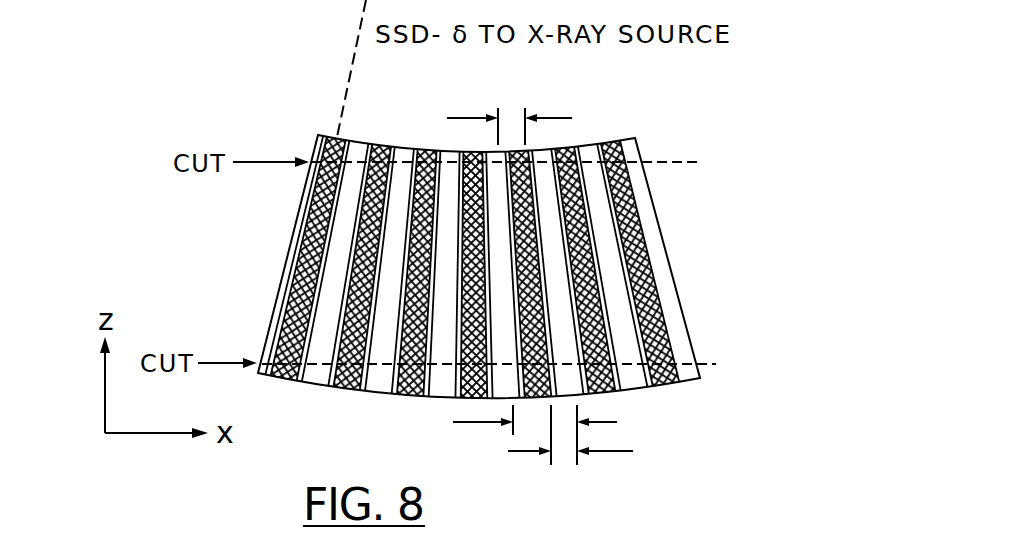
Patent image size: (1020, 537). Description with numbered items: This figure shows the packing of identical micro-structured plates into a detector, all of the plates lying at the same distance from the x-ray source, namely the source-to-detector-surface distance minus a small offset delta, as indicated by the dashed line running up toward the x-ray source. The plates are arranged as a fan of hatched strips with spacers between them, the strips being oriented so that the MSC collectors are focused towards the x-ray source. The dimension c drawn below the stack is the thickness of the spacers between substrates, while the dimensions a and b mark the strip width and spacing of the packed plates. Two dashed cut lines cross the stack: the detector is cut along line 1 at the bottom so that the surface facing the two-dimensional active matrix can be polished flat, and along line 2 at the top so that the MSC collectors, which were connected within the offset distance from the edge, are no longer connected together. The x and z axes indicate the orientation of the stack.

The width of hatched strip a is at (509, 124).
The hatched strip spacing b is at (545, 435).
The thickness of the spacers c is at (579, 456).
The line 1 is at (528, 367).
The line 2 is at (545, 165).